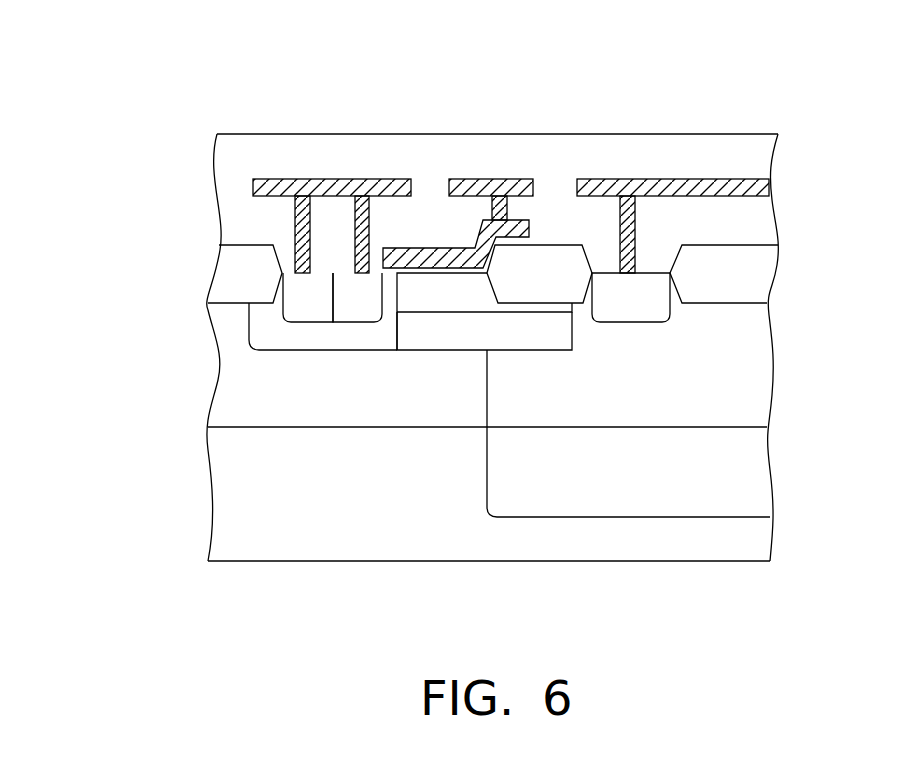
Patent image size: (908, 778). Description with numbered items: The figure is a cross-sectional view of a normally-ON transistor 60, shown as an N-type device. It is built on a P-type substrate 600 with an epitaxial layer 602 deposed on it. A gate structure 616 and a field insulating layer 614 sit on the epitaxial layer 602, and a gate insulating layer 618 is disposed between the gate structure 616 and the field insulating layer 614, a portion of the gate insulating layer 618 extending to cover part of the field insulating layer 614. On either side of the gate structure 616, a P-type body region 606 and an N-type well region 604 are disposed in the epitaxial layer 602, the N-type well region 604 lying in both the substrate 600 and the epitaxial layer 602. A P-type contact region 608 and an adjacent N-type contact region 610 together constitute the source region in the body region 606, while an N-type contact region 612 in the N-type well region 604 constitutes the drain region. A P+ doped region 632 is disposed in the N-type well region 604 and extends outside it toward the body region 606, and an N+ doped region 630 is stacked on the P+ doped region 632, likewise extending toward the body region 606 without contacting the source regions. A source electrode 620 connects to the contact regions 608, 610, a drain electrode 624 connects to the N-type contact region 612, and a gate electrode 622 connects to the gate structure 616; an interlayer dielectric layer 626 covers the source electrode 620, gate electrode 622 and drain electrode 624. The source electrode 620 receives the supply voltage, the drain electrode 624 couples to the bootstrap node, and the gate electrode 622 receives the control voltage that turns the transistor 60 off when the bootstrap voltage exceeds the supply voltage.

The normally-ON transistor 60 is at (90, 67).
The P-type substrate 600 is at (468, 546).
The epitaxial layer 602 is at (223, 393).
The N-type well region 604 is at (698, 398).
The P-type body region 606 is at (262, 331).
The P-type contact region 608 is at (303, 310).
The N-type contact region 610 is at (358, 310).
The N-type contact region 612 is at (653, 303).
The field insulating layer 614 is at (223, 271).
The gate structure 616 is at (443, 253).
The gate insulating layer 618 is at (403, 267).
The source electrode 620 is at (283, 185).
The gate electrode 622 is at (484, 183).
The drain electrode 624 is at (722, 183).
The interlayer dielectric layer 626 is at (755, 159).
The N+ doped region 630 is at (468, 304).
The P+ doped region 632 is at (464, 343).